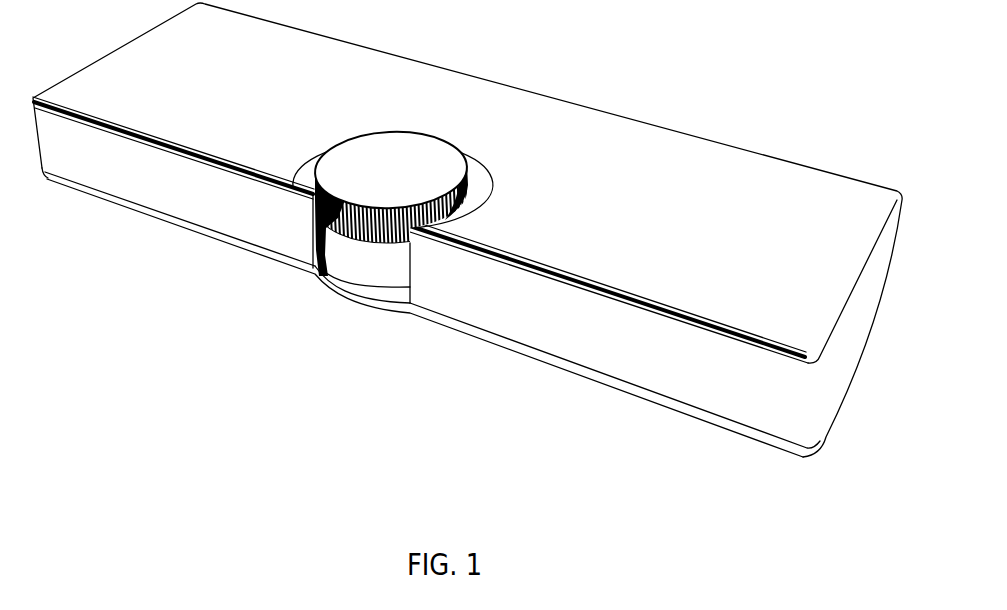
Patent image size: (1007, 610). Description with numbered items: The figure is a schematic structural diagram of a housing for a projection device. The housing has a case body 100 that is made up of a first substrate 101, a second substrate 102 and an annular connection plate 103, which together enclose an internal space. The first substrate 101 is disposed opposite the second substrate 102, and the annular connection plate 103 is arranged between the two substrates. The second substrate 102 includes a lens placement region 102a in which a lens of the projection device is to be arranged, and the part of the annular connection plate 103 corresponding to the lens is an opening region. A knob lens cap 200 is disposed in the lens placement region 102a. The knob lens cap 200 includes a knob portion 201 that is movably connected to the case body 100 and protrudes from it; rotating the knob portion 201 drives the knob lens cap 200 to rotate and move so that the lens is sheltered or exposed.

The case body 100 is at (570, 135).
The first substrate 101 is at (543, 280).
The second substrate 102 is at (464, 328).
The lens placement region 102a is at (393, 277).
The annular connection plate 103 is at (168, 188).
The knob lens cap 200 is at (383, 145).
The knob portion 201 is at (360, 240).